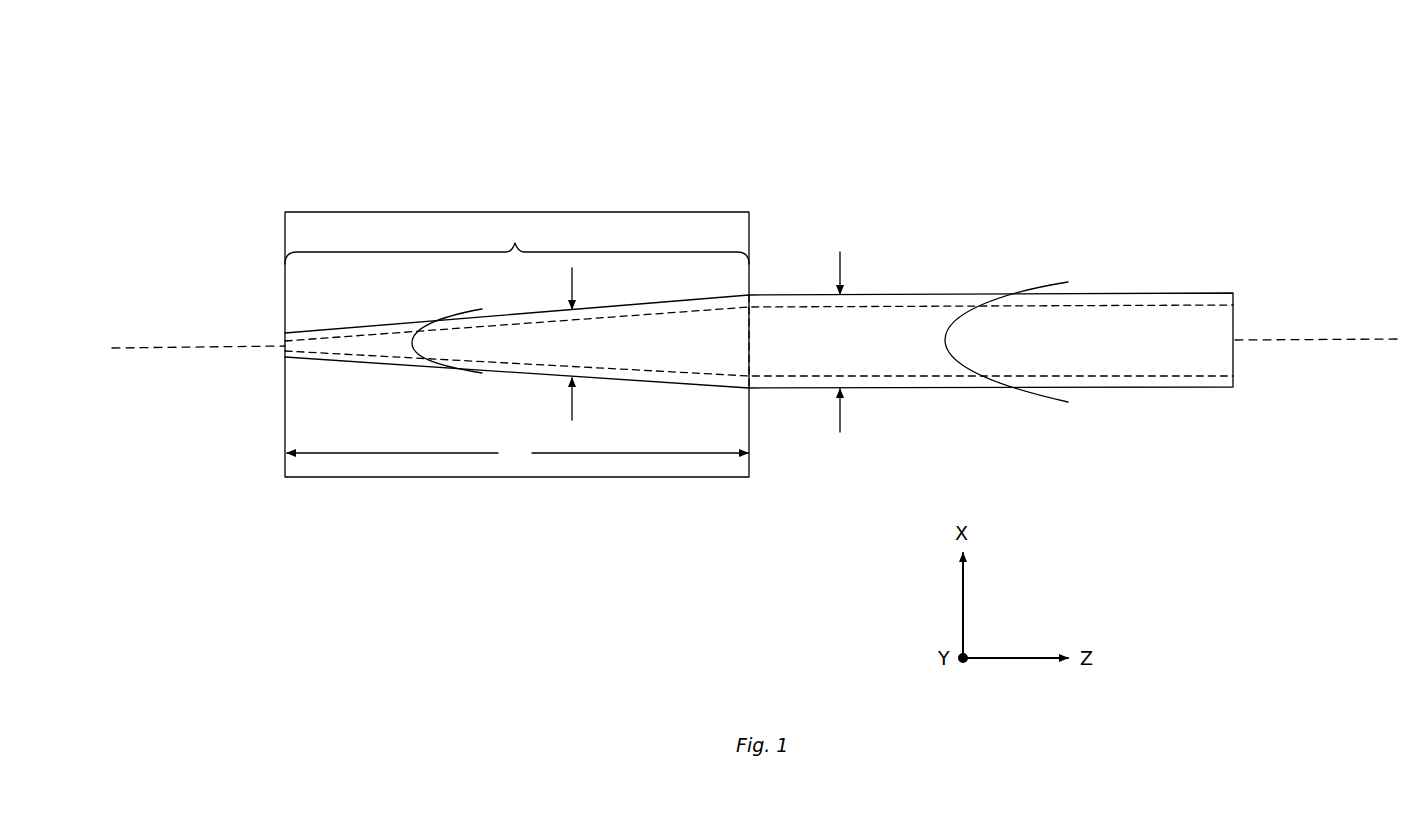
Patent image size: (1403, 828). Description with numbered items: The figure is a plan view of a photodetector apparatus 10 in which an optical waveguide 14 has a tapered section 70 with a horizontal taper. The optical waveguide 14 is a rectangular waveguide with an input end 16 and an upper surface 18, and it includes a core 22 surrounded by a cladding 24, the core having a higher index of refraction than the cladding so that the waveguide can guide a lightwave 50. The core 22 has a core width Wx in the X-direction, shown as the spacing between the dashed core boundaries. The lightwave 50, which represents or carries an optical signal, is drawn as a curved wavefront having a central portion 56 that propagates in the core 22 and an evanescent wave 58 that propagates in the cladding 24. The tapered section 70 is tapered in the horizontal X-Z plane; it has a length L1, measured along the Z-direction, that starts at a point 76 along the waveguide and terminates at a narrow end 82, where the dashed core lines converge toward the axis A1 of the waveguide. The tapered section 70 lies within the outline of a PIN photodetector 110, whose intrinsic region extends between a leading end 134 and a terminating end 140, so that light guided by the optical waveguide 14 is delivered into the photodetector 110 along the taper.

The photodetector apparatus 10 is at (835, 41).
The optical waveguide 14 is at (1178, 222).
The input end 16 is at (1236, 324).
The upper surface 18 is at (1139, 367).
The core 22 is at (1164, 363).
The cladding 24 is at (1208, 386).
The lightwave 50 is at (416, 322).
The central portion 56 is at (424, 360).
The evanescent wave 58 is at (486, 375).
The tapered section 70 is at (517, 241).
The point 76 is at (750, 338).
The narrow end 82 is at (285, 346).
The PIN photodetector 110 is at (392, 190).
The leading end 134 is at (750, 437).
The terminating end 140 is at (285, 444).
The optical axis A1 is at (1318, 339).
The core width in the X-direction Wx is at (839, 271).
The length L1 is at (517, 454).